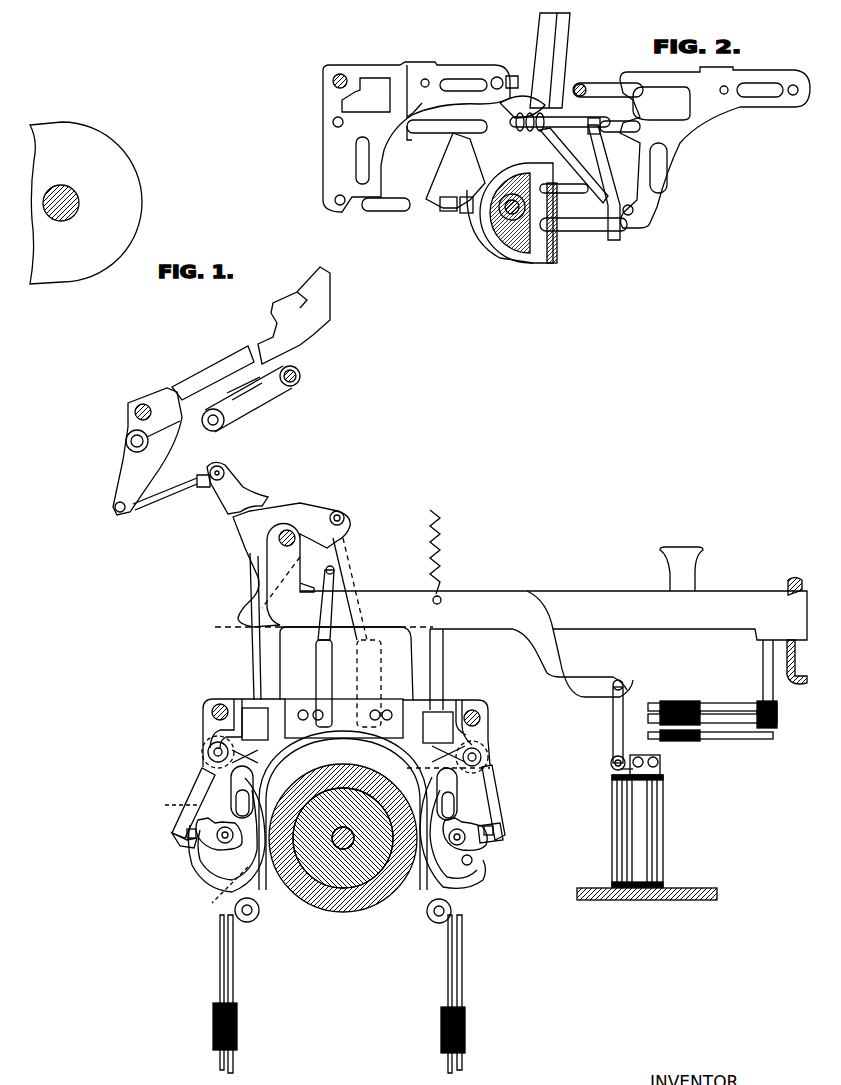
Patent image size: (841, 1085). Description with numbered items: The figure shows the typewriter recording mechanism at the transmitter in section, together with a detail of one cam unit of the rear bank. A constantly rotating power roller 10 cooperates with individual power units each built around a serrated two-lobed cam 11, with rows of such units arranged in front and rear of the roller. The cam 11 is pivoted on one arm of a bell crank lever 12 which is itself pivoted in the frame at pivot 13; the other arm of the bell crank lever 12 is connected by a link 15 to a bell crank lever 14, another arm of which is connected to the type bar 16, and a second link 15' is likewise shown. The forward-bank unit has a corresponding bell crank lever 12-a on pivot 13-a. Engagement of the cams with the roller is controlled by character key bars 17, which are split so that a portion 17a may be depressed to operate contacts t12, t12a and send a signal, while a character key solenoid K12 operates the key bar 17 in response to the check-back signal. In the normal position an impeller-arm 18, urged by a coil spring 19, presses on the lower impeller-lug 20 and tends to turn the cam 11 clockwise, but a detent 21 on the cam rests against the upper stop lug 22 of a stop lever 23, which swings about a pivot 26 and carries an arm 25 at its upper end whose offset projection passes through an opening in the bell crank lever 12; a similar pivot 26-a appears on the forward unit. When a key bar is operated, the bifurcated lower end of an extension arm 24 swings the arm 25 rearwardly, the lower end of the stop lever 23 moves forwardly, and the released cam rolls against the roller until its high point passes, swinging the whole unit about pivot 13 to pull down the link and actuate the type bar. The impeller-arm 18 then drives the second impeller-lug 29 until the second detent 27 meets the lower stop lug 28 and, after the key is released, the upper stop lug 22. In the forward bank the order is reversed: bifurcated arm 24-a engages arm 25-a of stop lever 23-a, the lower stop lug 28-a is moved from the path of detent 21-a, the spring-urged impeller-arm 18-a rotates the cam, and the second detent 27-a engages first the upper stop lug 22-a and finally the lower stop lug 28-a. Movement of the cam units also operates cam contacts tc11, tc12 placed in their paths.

In FIG. 1, the power roller 10 is at (336, 912).
In FIG. 2, the cam 11 is at (546, 262).
In FIG. 2, the bell crank lever 12 is at (347, 128).
In FIG. 1, the bell crank lever 12 is at (207, 722).
In FIG. 1, the bell crank lever 12-a is at (480, 727).
In FIG. 2, the pivot 13 is at (376, 78).
In FIG. 1, the pivot 13 is at (214, 709).
In FIG. 1, the pivot 13-a is at (480, 714).
In FIG. 1, the bell crank lever 14 is at (270, 510).
In FIG. 1, the link 15 is at (325, 646).
In FIG. 1, the connecting rod 15' is at (360, 632).
In FIG. 1, the type bar 16 is at (207, 368).
In FIG. 1, the character key bar 17 is at (392, 598).
In FIG. 1, the key bar portion 17a is at (588, 600).
In FIG. 2, the impeller-arm 18 is at (590, 153).
In FIG. 1, the impeller-arm 18 is at (262, 792).
In FIG. 1, the impeller-arm 18-a is at (477, 897).
In FIG. 2, the coil spring 19 is at (547, 134).
In FIG. 2, the impeller-lug 20 is at (588, 231).
In FIG. 2, the detent 21 is at (462, 212).
In FIG. 1, the detent 21 is at (186, 835).
In FIG. 1, the detent 21-a is at (494, 832).
In FIG. 2, the upper stop lug 22 is at (476, 228).
In FIG. 1, the upper stop lug 22 is at (208, 870).
In FIG. 1, the upper stop lug 22-a is at (490, 822).
In FIG. 2, the stop lever 23 is at (443, 170).
In FIG. 1, the stop lever 23 is at (195, 787).
In FIG. 1, the stop lever 23-a is at (495, 790).
In FIG. 2, the extension arm 24 is at (558, 48).
In FIG. 1, the extension arm 24 is at (262, 647).
In FIG. 1, the bifurcated arm 24-a is at (428, 653).
In FIG. 2, the arm 25 is at (515, 76).
In FIG. 1, the arm 25 is at (243, 720).
In FIG. 1, the arm 25-a is at (445, 722).
In FIG. 2, the pivot 26 is at (448, 120).
In FIG. 1, the pivot 26 is at (207, 752).
In FIG. 1, the pin 26-a is at (472, 757).
In FIG. 2, the second detent 27 is at (508, 255).
In FIG. 1, the second detent 27 is at (261, 909).
In FIG. 1, the second detent 27-a is at (415, 910).
In FIG. 2, the lower stop lug 28 is at (445, 208).
In FIG. 1, the lower stop lug 28 is at (193, 846).
In FIG. 1, the lower stop lug 28-a is at (490, 843).
In FIG. 1, the second impeller-lug 29 is at (197, 864).
In FIG. 1, the cam contact tc11 is at (232, 933).
In FIG. 1, the cam contact tc12 is at (447, 933).
In FIG. 1, the contact t12 is at (780, 713).
In FIG. 1, the contact t12a is at (757, 730).
In FIG. 1, the character key solenoid K12 is at (652, 836).